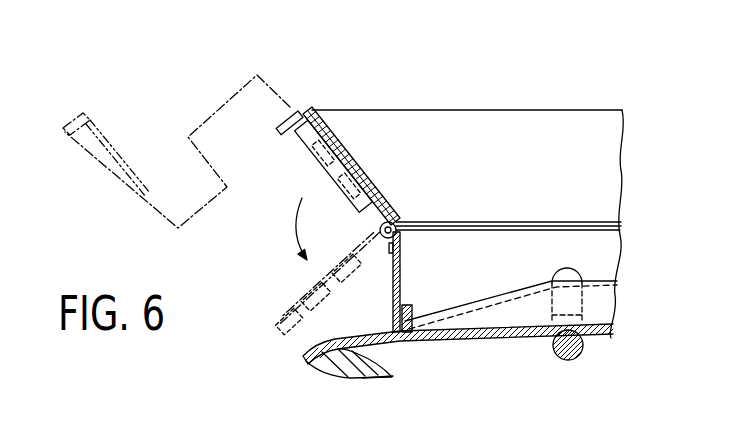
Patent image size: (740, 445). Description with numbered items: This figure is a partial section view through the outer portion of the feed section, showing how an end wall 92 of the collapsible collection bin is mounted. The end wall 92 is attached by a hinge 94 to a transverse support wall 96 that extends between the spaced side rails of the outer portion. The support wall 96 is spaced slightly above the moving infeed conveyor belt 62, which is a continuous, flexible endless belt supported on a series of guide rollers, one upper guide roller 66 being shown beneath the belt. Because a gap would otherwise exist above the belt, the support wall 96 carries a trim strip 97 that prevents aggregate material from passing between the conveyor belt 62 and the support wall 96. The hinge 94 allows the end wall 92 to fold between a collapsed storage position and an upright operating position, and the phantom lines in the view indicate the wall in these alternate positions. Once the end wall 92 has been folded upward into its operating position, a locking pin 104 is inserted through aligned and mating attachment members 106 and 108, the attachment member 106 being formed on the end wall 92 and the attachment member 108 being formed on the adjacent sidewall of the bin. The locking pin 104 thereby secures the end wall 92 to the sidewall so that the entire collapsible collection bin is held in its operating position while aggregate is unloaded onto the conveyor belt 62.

The infeed conveyor belt 62 is at (482, 339).
The upper guide roller 66 is at (575, 352).
The end wall 92 is at (336, 139).
The hinge 94 is at (380, 229).
The transverse support wall 96 is at (401, 246).
The trim strip 97 is at (412, 316).
The locking pin 104 is at (292, 99).
The attachment member 106 is at (302, 140).
The attachment member 108 is at (316, 143).